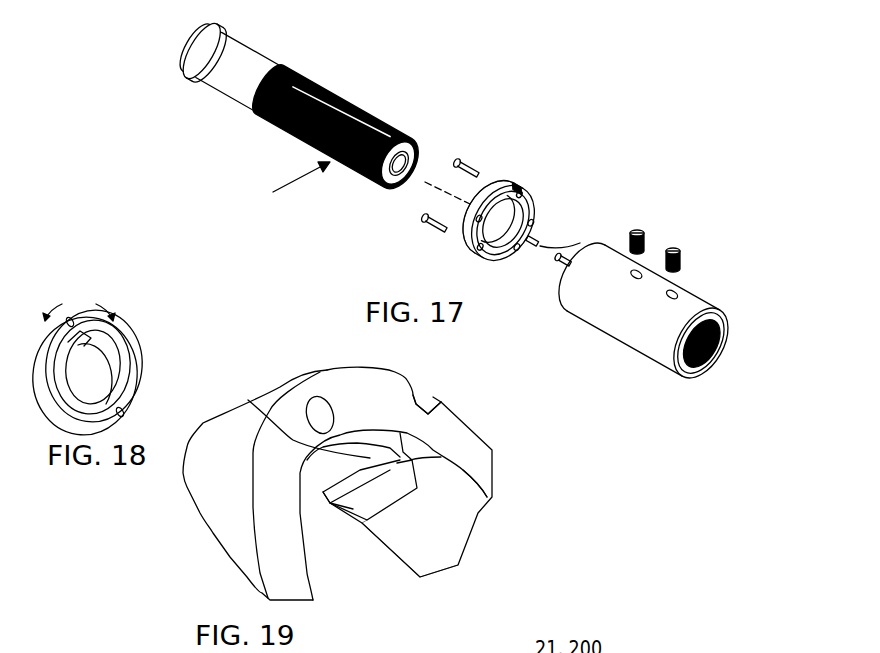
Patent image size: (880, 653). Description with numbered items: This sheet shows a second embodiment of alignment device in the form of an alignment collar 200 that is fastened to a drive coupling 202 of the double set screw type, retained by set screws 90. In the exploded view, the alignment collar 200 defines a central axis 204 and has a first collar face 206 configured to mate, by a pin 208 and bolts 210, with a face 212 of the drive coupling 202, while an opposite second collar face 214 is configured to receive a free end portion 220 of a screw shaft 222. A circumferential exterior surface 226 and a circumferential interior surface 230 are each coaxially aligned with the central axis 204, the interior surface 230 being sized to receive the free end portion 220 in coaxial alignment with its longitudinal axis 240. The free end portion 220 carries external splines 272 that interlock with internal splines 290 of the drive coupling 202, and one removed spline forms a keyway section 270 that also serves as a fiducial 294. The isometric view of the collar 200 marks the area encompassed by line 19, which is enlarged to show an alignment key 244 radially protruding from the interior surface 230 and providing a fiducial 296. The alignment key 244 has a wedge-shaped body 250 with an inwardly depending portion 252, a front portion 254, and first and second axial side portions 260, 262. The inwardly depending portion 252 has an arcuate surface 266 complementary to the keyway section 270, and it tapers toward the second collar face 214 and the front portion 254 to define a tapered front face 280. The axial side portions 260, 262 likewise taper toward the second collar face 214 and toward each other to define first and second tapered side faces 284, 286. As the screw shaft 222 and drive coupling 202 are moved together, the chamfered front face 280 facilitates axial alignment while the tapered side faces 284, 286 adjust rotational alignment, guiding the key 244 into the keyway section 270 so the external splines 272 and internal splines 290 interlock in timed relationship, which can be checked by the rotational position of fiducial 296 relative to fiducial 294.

In FIG. 18, the detail area line 19 is at (79, 303).
In FIG. 17, the set screws 90 is at (648, 232).
In FIG. 17, the alignment collar 200 is at (497, 207).
In FIG. 18, the alignment collar 200 is at (109, 371).
In FIG. 19, the alignment collar 200 is at (327, 371).
In FIG. 17, the drive coupling 202 is at (652, 310).
In FIG. 17, the central axis 204 is at (414, 199).
In FIG. 17, the first collar face 206 is at (508, 249).
In FIG. 17, the pin 208 is at (568, 260).
In FIG. 17, the bolt 210 is at (457, 160).
In FIG. 17, the face of drive coupling 212 is at (563, 281).
In FIG. 17, the second collar face 214 is at (462, 224).
In FIG. 19, the second collar face 214 is at (378, 395).
In FIG. 17, the free end portion 220 is at (343, 128).
In FIG. 17, the screw shaft 222 is at (246, 103).
In FIG. 17, the circumferential exterior surface 226 is at (463, 225).
In FIG. 17, the circumferential interior surface 230 is at (530, 233).
In FIG. 19, the circumferential interior surface 230 is at (451, 556).
In FIG. 17, the longitudinal axis 240 is at (448, 193).
In FIG. 18, the alignment key 244 is at (86, 340).
In FIG. 19, the alignment key 244 is at (362, 523).
In FIG. 19, the wedge-shaped body 250 is at (399, 433).
In FIG. 19, the inwardly depending portion 252 is at (353, 509).
In FIG. 19, the front portion 254 is at (495, 454).
In FIG. 19, the first axial side portion 260 is at (285, 415).
In FIG. 19, the second axial side portion 262 is at (517, 506).
In FIG. 19, the arcuate surface 266 is at (400, 503).
In FIG. 17, the keyway section 270 is at (342, 128).
In FIG. 17, the external splines 272 is at (285, 187).
In FIG. 19, the tapered front face 280 is at (441, 457).
In FIG. 19, the first tapered side face 284 is at (285, 415).
In FIG. 19, the second tapered side face 286 is at (490, 492).
In FIG. 17, the internal splines 290 is at (705, 344).
In FIG. 17, the fiducial 294 is at (343, 110).
In FIG. 17, the fiducial 296 is at (493, 188).
In FIG. 19, the fiducial 296 is at (424, 409).